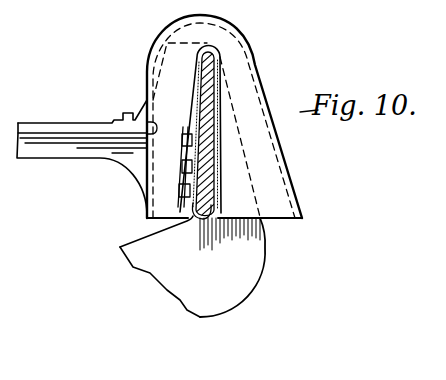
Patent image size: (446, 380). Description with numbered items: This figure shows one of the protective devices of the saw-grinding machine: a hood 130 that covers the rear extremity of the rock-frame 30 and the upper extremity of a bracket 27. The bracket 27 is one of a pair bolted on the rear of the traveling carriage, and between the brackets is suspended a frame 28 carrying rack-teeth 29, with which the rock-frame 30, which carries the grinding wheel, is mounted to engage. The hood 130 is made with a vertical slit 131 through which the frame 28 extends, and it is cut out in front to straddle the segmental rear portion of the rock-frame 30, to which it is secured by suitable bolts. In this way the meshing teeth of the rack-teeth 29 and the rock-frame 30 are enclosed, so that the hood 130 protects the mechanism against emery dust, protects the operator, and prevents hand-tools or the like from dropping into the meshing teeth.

The rock-frame 30 is at (43, 128).
The hood 130 is at (255, 83).
The vertical slit 131 is at (232, 182).
The rack-teeth 29 is at (187, 218).
The frame 28 is at (207, 221).
The bracket 27 is at (257, 247).